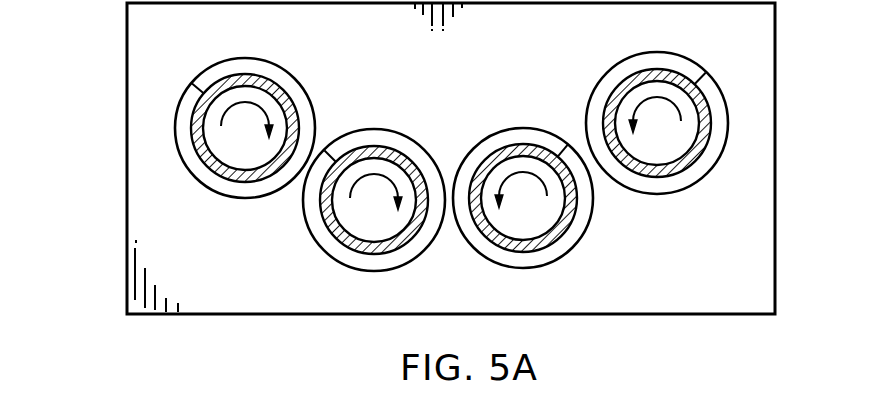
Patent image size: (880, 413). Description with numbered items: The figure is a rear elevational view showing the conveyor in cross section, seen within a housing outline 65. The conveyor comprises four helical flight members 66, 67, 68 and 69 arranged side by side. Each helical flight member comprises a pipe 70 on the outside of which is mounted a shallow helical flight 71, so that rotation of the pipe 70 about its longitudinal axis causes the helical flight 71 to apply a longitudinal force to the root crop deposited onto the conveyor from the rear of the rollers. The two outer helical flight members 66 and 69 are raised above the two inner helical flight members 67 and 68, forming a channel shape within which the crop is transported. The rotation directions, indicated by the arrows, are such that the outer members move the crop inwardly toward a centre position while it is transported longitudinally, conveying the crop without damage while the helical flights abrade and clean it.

The roller station housing 65 is at (148, 62).
The helical flight member 66 is at (251, 63).
The helical flight member 67 is at (401, 140).
The helical flight member 68 is at (507, 137).
The helical flight member 69 is at (662, 104).
The pipe 70 is at (676, 73).
The helical flight 71 is at (713, 98).